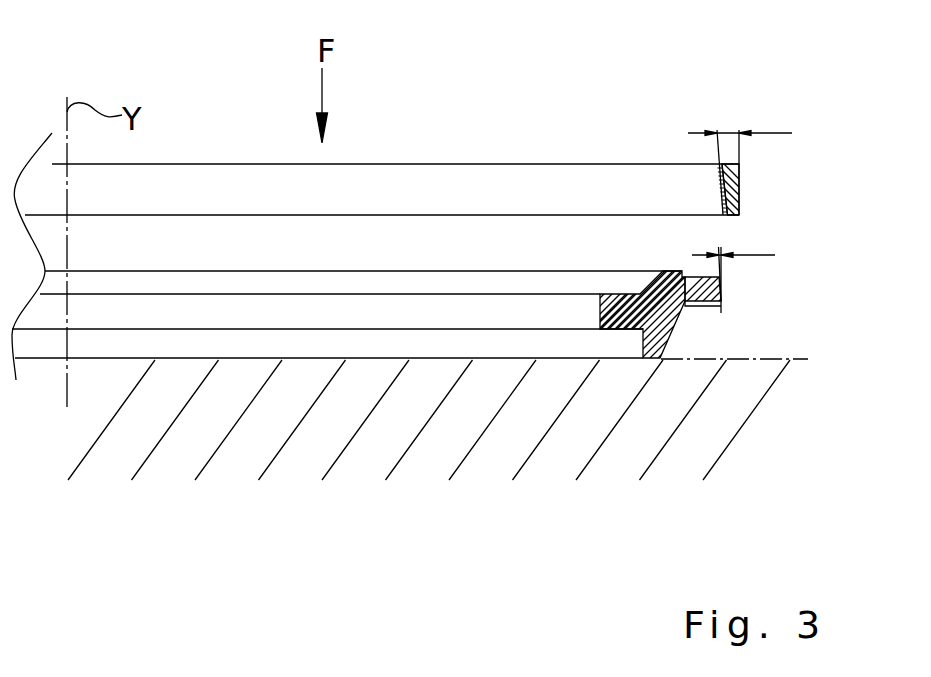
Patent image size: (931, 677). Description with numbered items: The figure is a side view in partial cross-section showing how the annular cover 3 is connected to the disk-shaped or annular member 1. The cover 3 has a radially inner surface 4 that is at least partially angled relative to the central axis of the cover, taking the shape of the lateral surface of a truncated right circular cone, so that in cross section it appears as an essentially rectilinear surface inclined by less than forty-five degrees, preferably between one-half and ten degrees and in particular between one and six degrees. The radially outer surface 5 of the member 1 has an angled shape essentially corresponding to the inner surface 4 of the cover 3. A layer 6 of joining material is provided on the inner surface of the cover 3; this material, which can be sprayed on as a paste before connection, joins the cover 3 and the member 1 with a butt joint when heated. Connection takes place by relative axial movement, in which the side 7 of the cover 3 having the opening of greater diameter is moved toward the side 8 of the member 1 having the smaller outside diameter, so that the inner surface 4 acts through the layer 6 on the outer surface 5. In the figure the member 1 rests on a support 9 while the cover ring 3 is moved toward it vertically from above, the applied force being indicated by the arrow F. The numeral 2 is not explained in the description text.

The disk-shaped or annular member 1 is at (659, 313).
The adhesive strip 2 is at (723, 300).
The annular cover 3 is at (740, 183).
The radially inner surface 4 is at (718, 180).
The radially outer surface 5 is at (723, 283).
The layer of joining material 6 is at (720, 200).
The side of the cover 7 is at (572, 213).
The side of the disk-shaped or annular member 8 is at (541, 271).
The support 9 is at (800, 361).